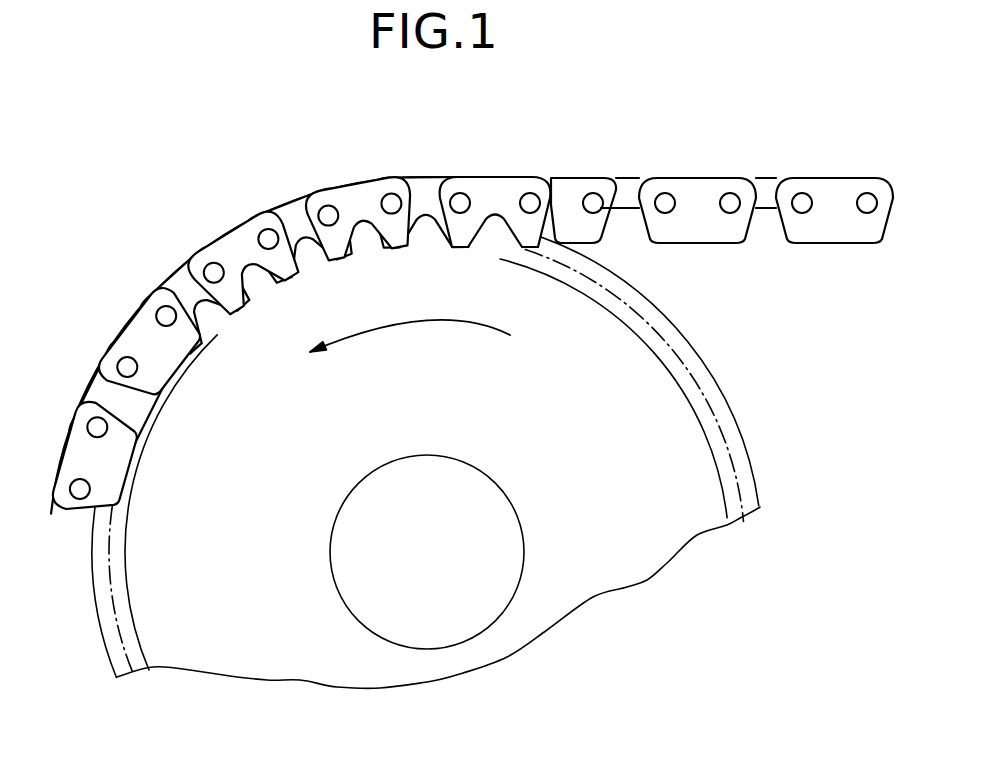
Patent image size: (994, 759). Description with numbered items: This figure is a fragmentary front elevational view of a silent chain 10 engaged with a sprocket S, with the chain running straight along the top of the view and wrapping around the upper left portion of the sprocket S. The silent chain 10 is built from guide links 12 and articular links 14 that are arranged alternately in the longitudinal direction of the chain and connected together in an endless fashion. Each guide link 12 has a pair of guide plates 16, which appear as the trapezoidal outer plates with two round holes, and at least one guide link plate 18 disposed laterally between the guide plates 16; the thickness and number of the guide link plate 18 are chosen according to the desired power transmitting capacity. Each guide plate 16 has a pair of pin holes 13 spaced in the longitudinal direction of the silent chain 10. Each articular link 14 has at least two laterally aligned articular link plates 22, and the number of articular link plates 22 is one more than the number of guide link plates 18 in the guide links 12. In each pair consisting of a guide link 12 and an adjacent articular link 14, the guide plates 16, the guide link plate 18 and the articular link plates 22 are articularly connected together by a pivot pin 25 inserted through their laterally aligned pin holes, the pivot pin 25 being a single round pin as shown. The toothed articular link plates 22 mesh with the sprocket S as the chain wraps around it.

The silent chain 10 is at (472, 305).
The guide link 12 is at (766, 205).
The pin hole 13 is at (797, 211).
The articular link 14 is at (623, 170).
The guide plate 16 is at (712, 238).
The guide link plate 18 is at (425, 176).
The articular link plate 22 is at (493, 178).
The pivot pin 25 is at (327, 213).
The sprocket S is at (748, 420).